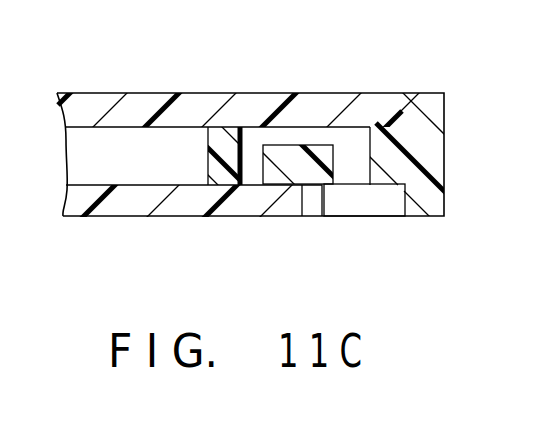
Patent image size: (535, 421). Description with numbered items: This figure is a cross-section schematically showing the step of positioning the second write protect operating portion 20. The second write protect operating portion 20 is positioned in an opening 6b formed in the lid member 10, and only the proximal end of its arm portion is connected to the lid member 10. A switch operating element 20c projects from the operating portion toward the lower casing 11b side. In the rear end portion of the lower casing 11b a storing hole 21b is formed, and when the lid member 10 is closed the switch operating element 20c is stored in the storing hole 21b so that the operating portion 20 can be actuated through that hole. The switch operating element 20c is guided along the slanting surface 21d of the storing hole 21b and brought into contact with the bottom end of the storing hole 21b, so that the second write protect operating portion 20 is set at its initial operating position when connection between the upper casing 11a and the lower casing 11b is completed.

The lid member 10 is at (436, 155).
The upper casing 11a is at (142, 105).
The lower casing 11b is at (122, 212).
The opening 6b is at (250, 140).
The second write protect operating portion 20 is at (322, 147).
The switch operating element 20c is at (303, 186).
The slanting surface 21d is at (309, 190).
The storing hole 21b is at (392, 205).